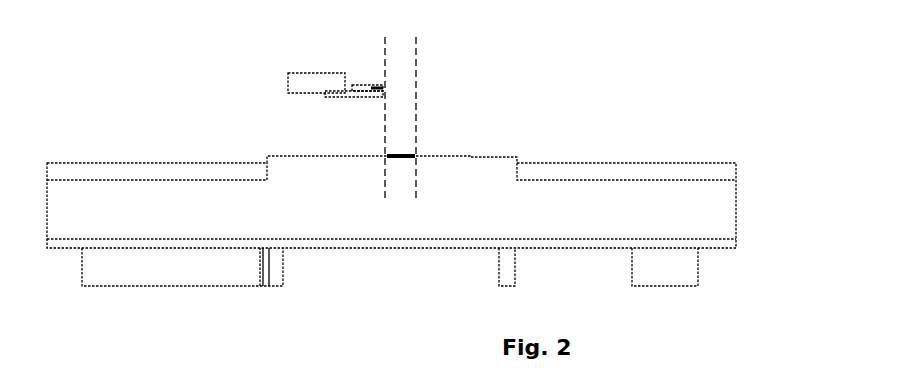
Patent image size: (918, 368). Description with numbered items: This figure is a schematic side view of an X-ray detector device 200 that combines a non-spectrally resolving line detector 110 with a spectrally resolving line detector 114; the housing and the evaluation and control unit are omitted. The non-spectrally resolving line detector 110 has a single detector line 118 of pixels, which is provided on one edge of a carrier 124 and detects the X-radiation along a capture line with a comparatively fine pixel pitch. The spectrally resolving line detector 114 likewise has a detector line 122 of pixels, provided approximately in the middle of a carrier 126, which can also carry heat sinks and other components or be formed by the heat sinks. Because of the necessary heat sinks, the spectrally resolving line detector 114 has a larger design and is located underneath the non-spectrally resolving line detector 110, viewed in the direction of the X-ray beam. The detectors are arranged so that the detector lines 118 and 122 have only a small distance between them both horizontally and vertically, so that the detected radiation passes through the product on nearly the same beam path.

The non-spectrally resolving line detector 110 is at (309, 69).
The spectrally resolving line detector 114 is at (198, 156).
The detector line 118 is at (377, 86).
The detector line 122 is at (401, 151).
The carrier 124 is at (338, 98).
The carrier 126 is at (408, 230).
The X-ray detector device 200 is at (527, 110).